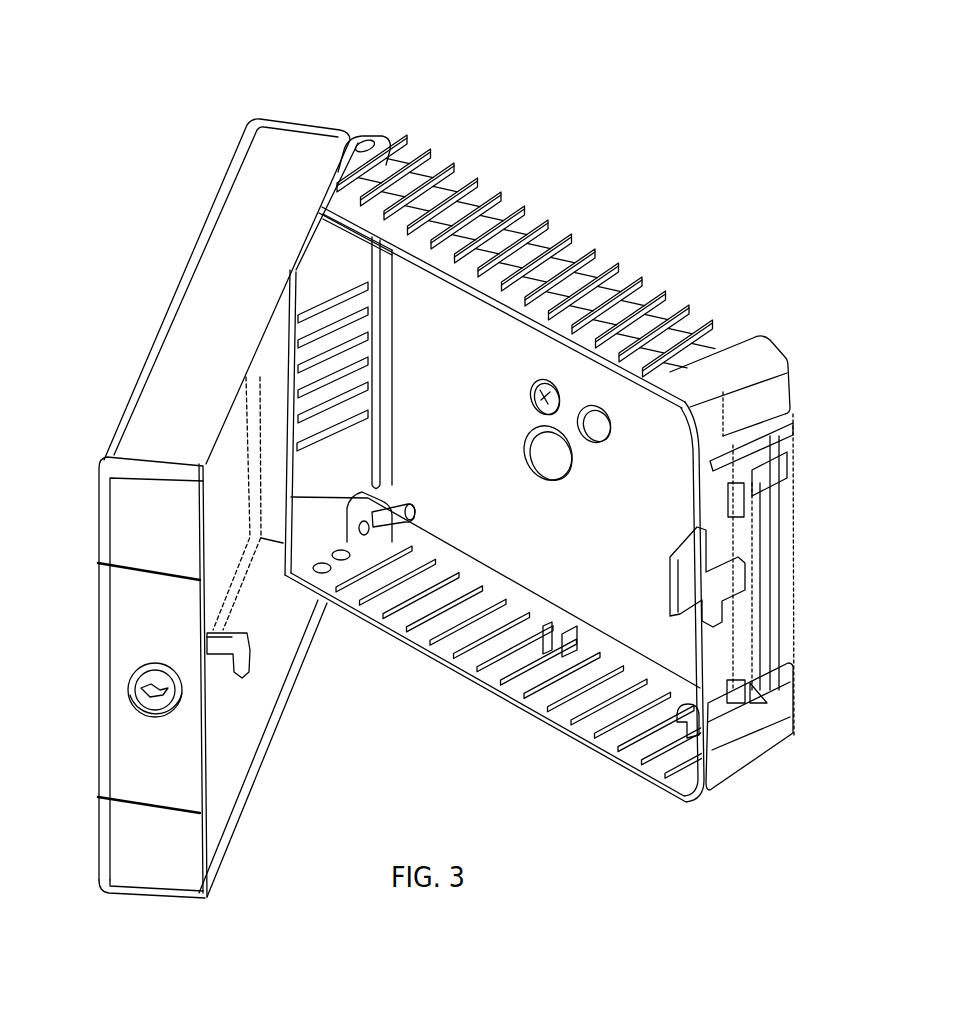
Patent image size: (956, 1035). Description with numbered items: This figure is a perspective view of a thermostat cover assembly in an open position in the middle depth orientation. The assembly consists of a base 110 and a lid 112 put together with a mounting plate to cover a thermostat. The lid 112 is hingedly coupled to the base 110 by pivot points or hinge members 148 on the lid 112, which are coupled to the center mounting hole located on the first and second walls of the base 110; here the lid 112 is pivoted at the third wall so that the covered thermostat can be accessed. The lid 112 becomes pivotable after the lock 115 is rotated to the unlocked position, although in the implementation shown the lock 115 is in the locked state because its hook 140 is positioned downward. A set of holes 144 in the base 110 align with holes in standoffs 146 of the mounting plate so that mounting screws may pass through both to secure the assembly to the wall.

The base 110 is at (780, 358).
The lid 112 is at (185, 267).
The lock 115 is at (133, 690).
The hook 140 is at (236, 633).
The holes 144 is at (357, 533).
The standoffs 146 is at (394, 515).
The hinge members 148 is at (352, 147).